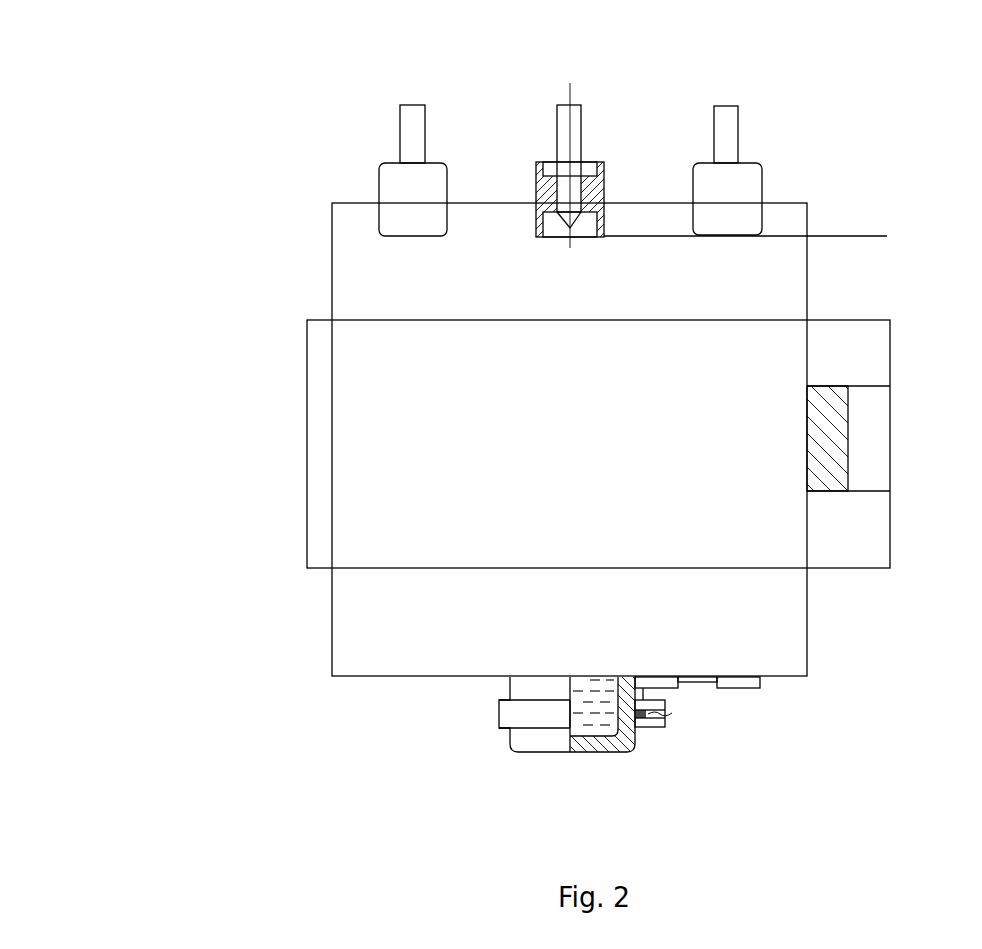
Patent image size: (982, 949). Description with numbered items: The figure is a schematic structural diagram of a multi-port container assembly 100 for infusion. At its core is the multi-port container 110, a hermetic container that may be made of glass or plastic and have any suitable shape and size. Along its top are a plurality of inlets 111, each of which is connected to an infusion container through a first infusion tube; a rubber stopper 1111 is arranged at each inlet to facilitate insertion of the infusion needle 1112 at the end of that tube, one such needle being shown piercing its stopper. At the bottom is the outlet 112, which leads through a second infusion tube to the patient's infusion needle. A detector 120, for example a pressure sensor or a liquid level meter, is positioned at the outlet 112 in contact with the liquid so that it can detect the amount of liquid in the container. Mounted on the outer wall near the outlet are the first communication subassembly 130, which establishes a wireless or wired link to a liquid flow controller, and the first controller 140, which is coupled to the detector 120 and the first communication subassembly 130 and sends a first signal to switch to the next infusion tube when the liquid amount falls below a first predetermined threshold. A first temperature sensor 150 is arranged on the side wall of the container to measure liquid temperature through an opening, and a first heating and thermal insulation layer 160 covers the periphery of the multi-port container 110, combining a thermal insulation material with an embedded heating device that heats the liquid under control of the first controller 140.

The multi-port container assembly 100 is at (493, 392).
The multi-port container 110 is at (599, 389).
The inlets 111 is at (583, 151).
The rubber stopper 1111 is at (379, 169).
The infusion needle 1112 is at (565, 155).
The outlet 112 is at (550, 724).
The detector 120 is at (672, 726).
The first communication subassembly 130 is at (722, 653).
The first controller 140 is at (662, 650).
The first temperature sensor 150 is at (821, 421).
The first heating and thermal insulation layer 160 is at (598, 416).